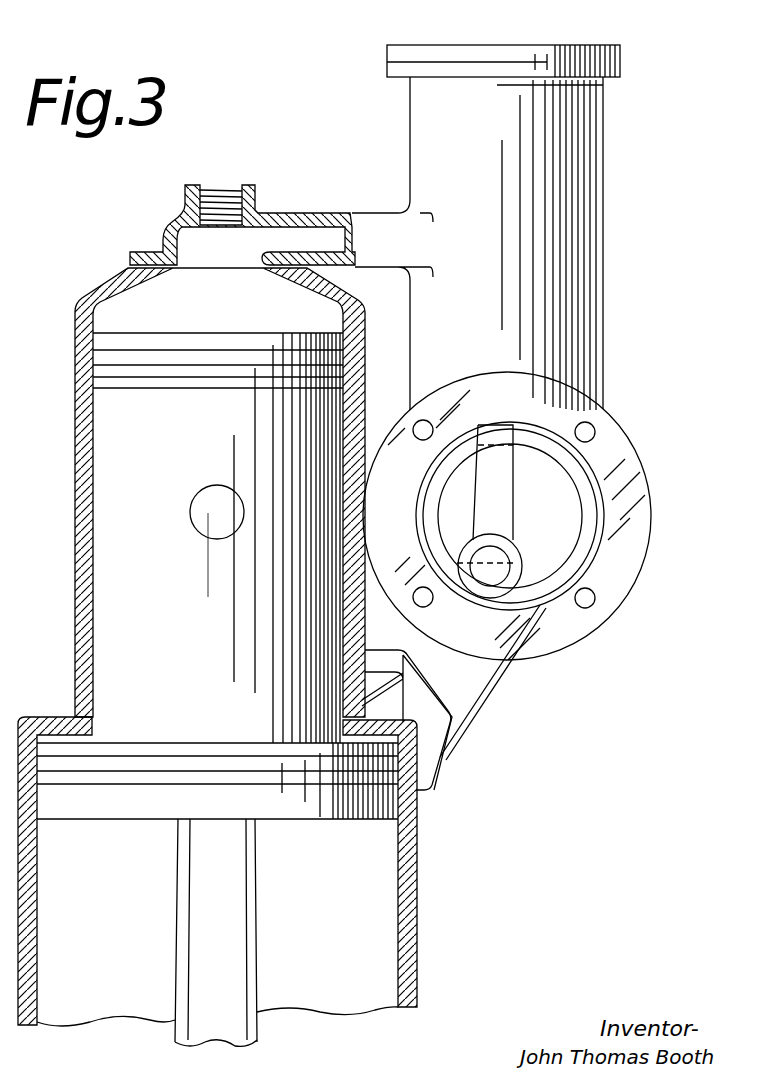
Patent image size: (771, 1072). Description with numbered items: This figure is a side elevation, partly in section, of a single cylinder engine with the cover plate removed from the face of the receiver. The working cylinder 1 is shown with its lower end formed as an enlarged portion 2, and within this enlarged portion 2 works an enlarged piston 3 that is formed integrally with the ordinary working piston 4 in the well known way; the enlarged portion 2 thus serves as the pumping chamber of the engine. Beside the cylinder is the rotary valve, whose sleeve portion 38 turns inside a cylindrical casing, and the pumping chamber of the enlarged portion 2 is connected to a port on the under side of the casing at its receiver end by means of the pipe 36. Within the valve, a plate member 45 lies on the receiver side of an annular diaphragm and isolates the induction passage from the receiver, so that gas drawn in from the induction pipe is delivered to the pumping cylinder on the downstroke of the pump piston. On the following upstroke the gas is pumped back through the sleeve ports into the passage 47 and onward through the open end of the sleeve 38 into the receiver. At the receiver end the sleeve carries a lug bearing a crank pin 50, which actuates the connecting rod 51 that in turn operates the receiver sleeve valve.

The working cylinder 1 is at (85, 465).
The enlarged portion 2 is at (37, 878).
The enlarged piston 3 is at (293, 788).
The working piston 4 is at (191, 553).
The pipe 36 is at (480, 683).
The sleeve portion 38 is at (550, 453).
The plate member 45 is at (527, 497).
The passage 47 is at (550, 550).
The crank pin 50 is at (493, 577).
The connecting rod 51 is at (497, 435).